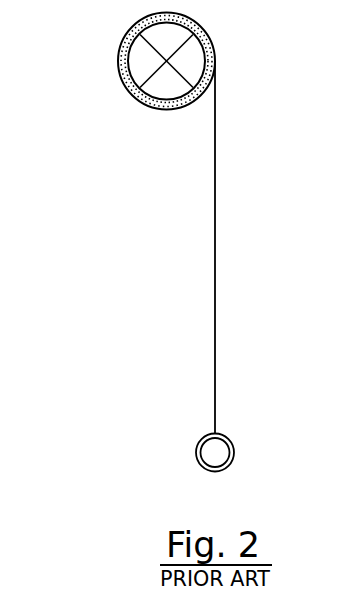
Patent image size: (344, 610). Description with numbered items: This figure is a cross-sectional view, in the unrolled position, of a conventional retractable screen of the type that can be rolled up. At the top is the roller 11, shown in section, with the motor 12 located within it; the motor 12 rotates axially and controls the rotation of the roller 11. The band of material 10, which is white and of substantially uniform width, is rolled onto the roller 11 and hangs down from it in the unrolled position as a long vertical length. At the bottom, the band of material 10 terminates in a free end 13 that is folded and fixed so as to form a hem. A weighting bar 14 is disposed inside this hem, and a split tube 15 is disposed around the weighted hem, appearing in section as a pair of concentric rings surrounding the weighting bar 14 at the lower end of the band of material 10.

The band of material 10 is at (215, 267).
The roller 11 is at (157, 112).
The motor 12 is at (139, 58).
The free end 13 is at (226, 440).
The weighting bar 14 is at (212, 457).
The split tube 15 is at (198, 447).